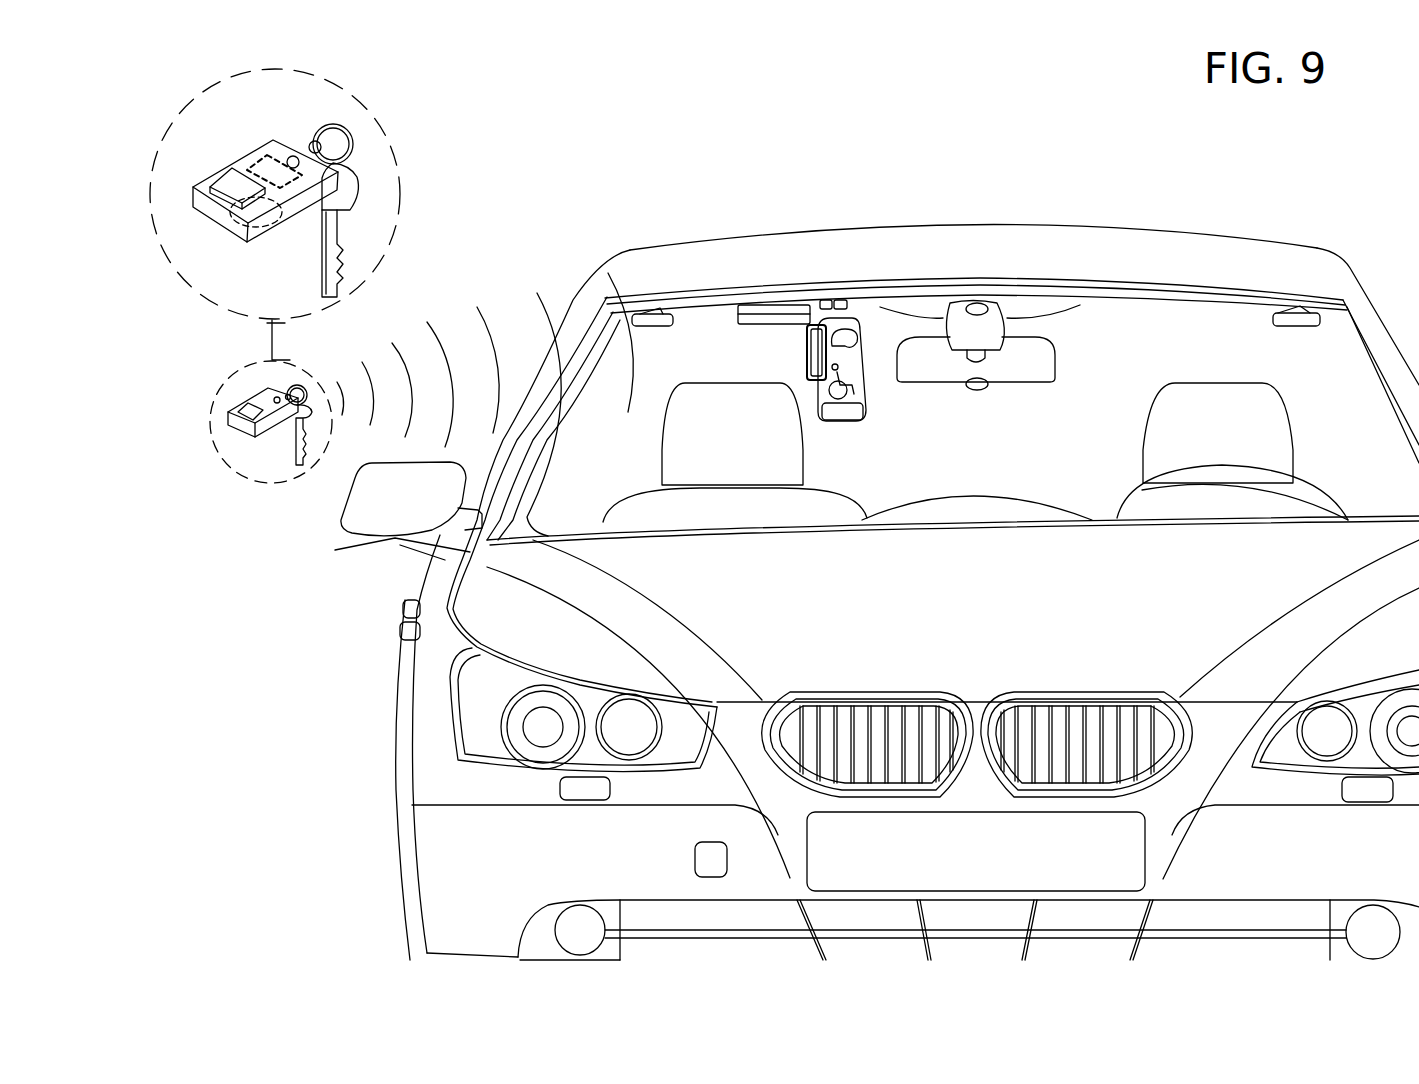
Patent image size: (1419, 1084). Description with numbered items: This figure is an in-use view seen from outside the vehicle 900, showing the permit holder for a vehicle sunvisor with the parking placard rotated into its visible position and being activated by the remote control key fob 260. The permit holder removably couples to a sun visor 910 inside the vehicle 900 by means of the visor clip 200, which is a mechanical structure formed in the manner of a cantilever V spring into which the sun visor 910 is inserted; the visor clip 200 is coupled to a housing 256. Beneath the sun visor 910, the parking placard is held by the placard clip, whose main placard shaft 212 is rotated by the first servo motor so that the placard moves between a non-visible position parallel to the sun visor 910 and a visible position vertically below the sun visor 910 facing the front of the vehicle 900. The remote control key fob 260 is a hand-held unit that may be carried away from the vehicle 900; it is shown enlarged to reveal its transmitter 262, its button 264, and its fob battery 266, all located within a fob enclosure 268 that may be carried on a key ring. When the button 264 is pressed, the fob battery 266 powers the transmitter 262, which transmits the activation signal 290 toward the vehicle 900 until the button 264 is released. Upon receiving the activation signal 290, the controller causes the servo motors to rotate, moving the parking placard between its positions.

The visor clip 200 is at (785, 305).
The main placard shaft 212 is at (808, 343).
The housing 256 is at (762, 328).
The remote control key fob 260 is at (250, 440).
The transmitter 262 is at (267, 162).
The button 264 is at (230, 183).
The fob battery 266 is at (268, 338).
The fob enclosure 268 is at (203, 210).
The activation signal 290 is at (474, 315).
The vehicle 900 is at (1293, 260).
The sun visor 910 is at (722, 400).